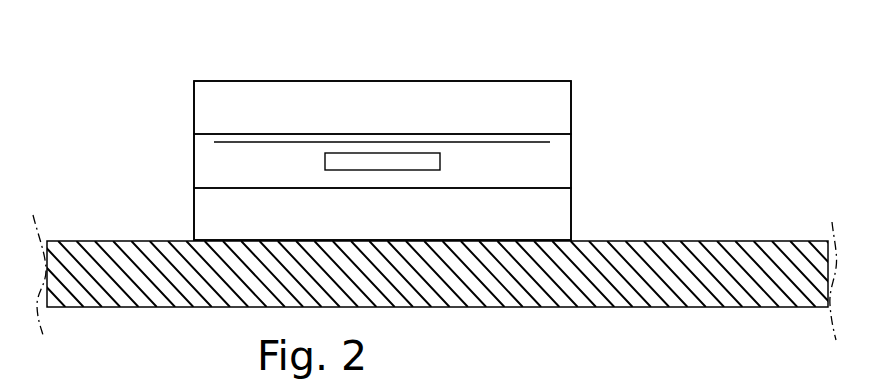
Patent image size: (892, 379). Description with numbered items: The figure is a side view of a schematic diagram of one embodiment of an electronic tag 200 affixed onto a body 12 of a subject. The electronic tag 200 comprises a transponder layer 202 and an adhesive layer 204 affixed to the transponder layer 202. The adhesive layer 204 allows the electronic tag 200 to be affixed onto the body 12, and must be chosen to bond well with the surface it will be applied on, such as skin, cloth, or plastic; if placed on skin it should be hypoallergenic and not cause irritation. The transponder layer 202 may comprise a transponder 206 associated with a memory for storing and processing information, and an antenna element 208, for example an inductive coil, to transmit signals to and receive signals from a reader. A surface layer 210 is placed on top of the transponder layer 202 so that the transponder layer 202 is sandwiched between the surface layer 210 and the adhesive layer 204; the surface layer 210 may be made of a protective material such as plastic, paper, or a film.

The body 12 is at (740, 242).
The electronic tag 200 is at (160, 57).
The transponder layer 202 is at (571, 165).
The adhesive layer 204 is at (571, 217).
The transponder 206 is at (325, 165).
The antenna element 208 is at (232, 142).
The surface layer 210 is at (532, 80).